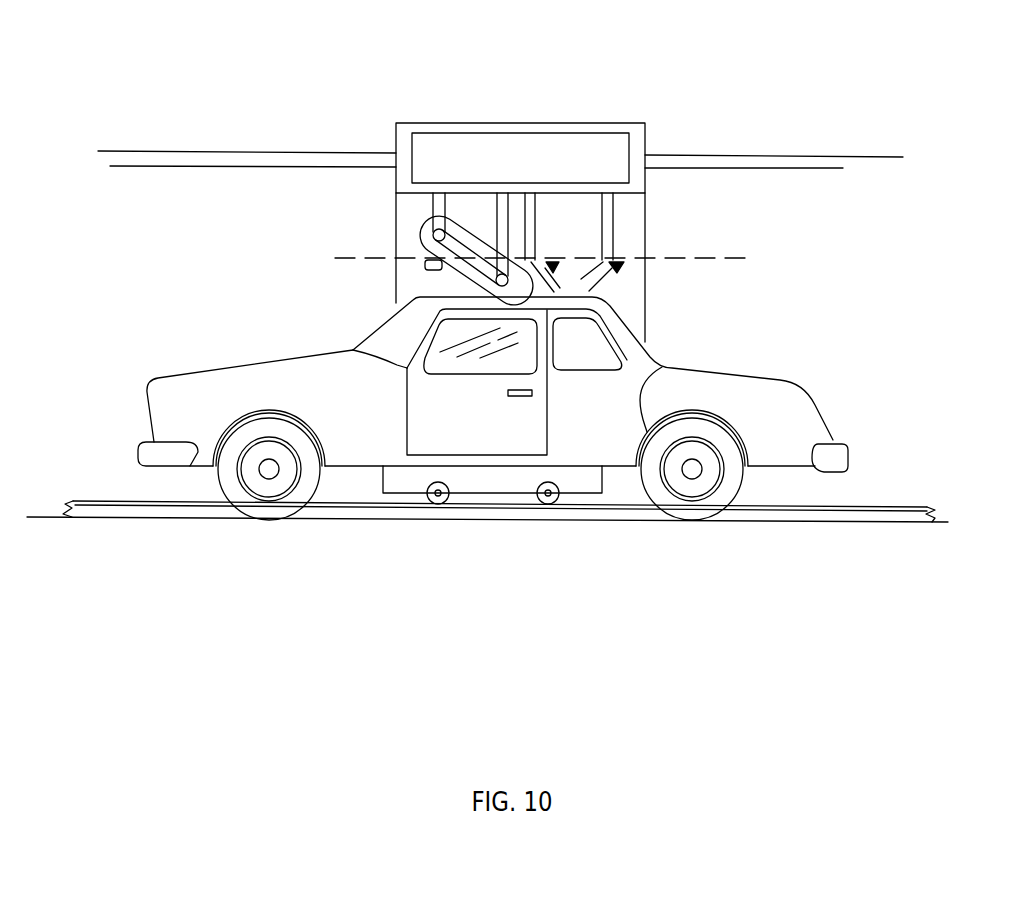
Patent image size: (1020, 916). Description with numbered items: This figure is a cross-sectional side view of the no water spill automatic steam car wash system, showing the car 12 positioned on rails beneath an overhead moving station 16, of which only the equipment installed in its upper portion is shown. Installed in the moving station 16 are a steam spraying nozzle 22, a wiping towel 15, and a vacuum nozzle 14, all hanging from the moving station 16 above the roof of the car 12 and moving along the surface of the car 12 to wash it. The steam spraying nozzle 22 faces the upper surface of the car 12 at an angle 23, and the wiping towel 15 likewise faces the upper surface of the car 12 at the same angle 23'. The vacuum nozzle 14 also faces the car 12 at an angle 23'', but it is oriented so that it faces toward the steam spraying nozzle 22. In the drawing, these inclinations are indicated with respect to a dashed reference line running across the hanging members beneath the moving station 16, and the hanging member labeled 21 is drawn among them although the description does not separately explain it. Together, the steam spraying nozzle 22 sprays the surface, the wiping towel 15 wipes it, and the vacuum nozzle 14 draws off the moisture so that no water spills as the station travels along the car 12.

The car 12 is at (668, 367).
The vacuum nozzle 14 is at (500, 232).
The wiping towel 15 is at (420, 226).
The moving station 16 is at (397, 275).
The hanger rod 21 is at (529, 207).
The steam spraying nozzle 22 is at (537, 258).
The angle 23 is at (579, 177).
The angle 23' is at (353, 280).
The angle 23'' is at (690, 276).